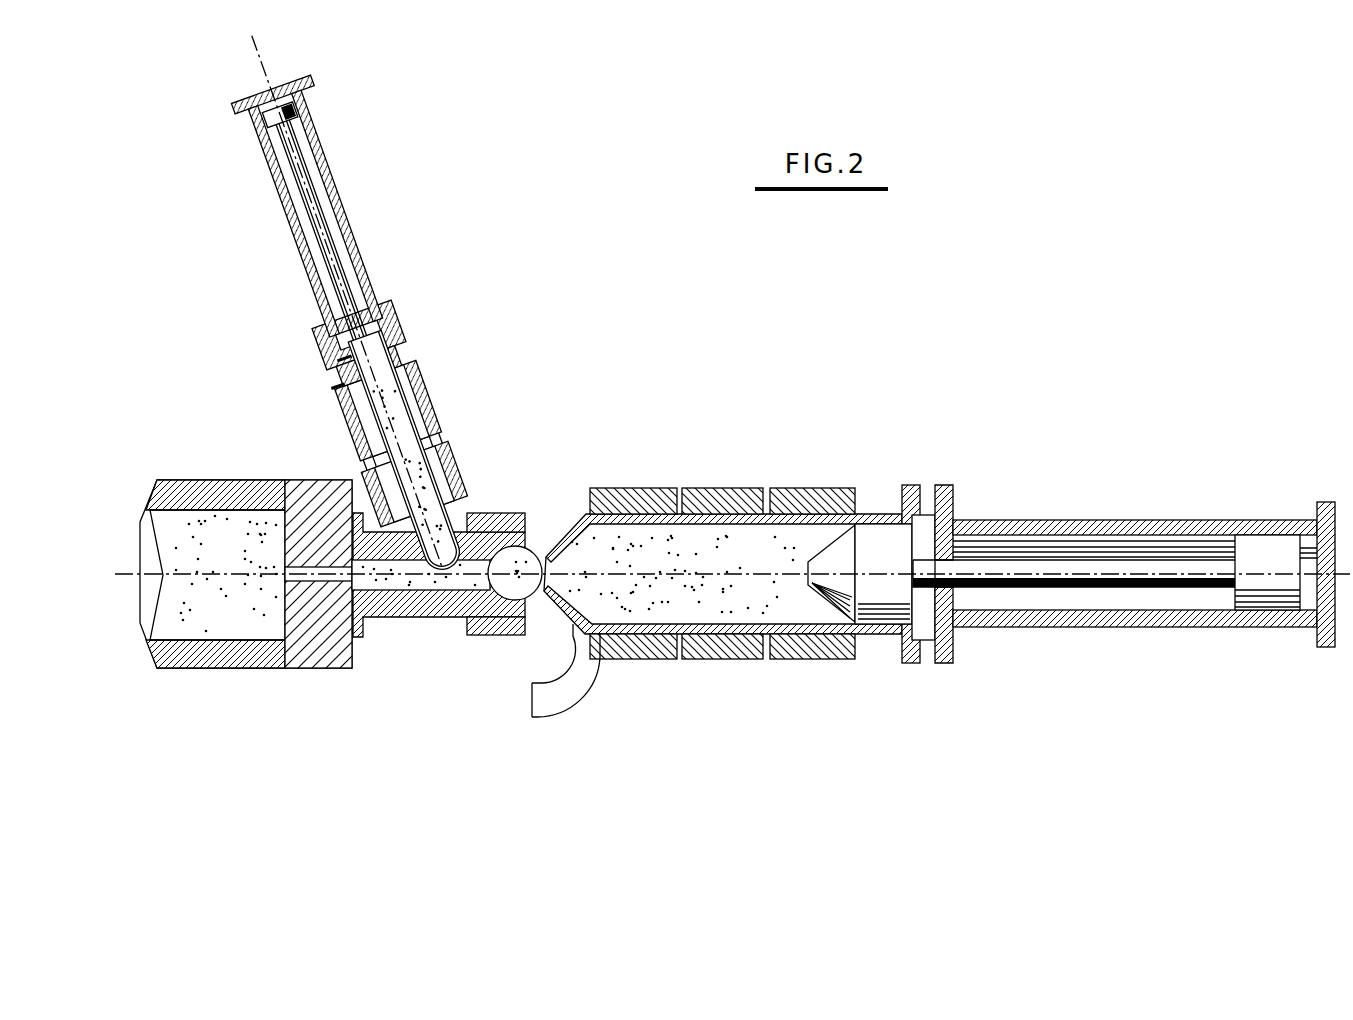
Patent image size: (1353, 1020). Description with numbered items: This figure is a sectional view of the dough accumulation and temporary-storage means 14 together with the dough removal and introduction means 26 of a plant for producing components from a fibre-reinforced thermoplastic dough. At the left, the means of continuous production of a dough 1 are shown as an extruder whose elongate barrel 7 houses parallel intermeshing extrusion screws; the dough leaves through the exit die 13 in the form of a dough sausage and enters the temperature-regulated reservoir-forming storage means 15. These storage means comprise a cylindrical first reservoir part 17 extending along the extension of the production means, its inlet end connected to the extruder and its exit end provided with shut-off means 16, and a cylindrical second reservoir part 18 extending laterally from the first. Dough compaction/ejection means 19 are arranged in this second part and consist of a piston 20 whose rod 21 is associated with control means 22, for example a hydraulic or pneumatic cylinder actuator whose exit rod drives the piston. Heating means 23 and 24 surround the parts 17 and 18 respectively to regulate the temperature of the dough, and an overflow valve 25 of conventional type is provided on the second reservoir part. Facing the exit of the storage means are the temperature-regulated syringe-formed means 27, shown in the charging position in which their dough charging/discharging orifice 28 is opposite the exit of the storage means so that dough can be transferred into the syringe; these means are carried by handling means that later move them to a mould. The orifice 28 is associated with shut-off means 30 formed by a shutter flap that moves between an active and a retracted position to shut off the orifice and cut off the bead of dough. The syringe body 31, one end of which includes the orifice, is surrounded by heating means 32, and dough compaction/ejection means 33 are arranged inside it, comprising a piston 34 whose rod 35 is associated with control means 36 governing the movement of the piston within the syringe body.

The means of continuous production of a dough 1 is at (185, 697).
The elongate barrel 7 is at (237, 672).
The exit die 13 is at (315, 672).
The dough accumulation and temporary-storage means 14 is at (538, 415).
The reservoir-forming storage means 15 is at (477, 475).
The shut-off means 16 is at (503, 598).
The first reservoir part 17 is at (415, 618).
The second reservoir part 18 is at (441, 435).
The dough compaction/ejection means 19 is at (424, 370).
The piston 20 is at (340, 366).
The rod 21 is at (332, 231).
The control means 22 is at (339, 146).
The heating means 23 is at (498, 645).
The heating means 24 is at (441, 390).
The overflow valve 25 is at (335, 388).
The dough removal and introduction means 26 is at (938, 410).
The syringe-formed means 27 is at (857, 417).
The dough charging/discharging orifice 28 is at (580, 518).
The shut-off means 30 is at (538, 612).
The syringe body 31 is at (800, 518).
The heating means 32 is at (707, 487).
The dough compaction/ejection means 33 is at (874, 535).
The piston 34 is at (840, 607).
The rod 35 is at (1030, 560).
The control means 36 is at (1142, 518).